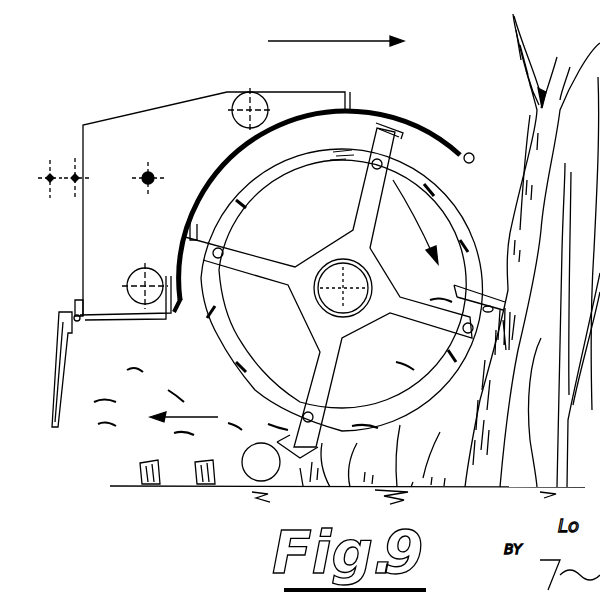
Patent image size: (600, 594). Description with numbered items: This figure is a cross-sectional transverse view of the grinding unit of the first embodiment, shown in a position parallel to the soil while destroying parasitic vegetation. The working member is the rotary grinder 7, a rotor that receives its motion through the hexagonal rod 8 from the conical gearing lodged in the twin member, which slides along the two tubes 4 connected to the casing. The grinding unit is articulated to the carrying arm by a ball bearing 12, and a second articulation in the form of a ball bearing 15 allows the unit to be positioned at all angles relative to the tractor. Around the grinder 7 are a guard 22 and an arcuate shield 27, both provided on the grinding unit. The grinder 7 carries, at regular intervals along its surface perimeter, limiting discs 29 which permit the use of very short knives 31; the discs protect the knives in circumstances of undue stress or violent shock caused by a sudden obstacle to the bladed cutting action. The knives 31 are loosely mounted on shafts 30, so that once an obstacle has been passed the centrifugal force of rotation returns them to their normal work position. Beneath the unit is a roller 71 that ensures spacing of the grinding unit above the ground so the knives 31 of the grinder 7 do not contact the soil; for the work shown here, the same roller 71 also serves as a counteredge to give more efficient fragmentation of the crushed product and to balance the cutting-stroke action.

The tube 4 is at (253, 105).
The rotary grinder 7 is at (192, 331).
The hexagonal rod 8 is at (148, 171).
The ball bearing 12 is at (75, 182).
The ball bearing 15 is at (47, 177).
The guard 22 is at (64, 368).
The arcuate shield 27 is at (433, 138).
The limiting disc 29 is at (297, 162).
The shaft 30 is at (323, 404).
The knife 31 is at (388, 147).
The roller 71 is at (258, 467).